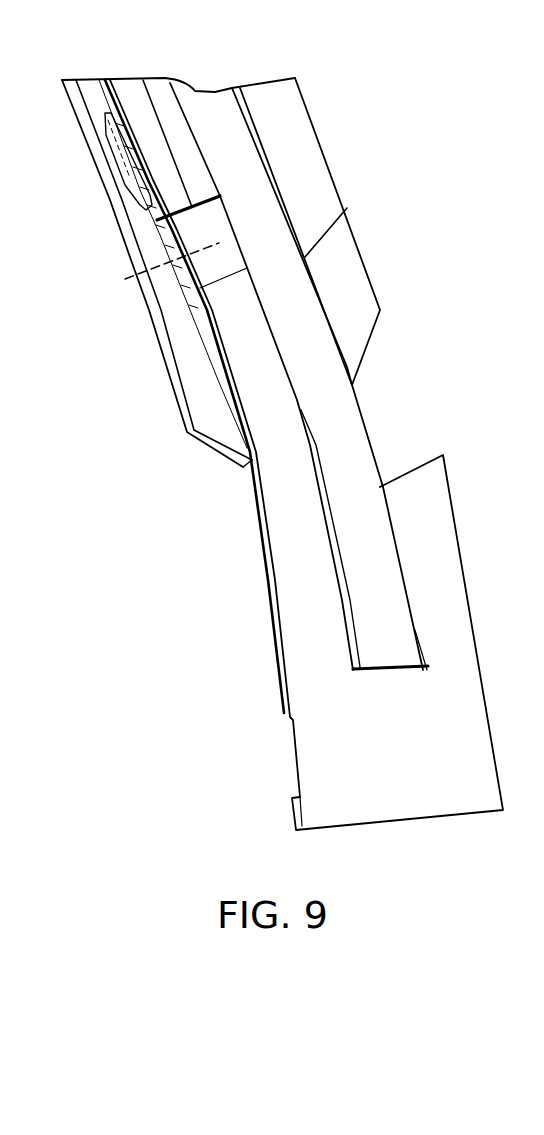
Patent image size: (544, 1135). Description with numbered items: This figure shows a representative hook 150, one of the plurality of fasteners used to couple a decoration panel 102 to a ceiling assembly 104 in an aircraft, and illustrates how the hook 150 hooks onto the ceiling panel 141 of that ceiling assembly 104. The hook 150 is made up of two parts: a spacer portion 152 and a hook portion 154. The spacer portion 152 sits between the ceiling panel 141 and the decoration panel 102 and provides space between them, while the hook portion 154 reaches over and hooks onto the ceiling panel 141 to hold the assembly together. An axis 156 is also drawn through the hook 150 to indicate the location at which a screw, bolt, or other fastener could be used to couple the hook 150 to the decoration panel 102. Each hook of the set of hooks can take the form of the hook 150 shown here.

The hook 150 is at (250, 655).
The decoration panel 102 is at (198, 365).
The axis 156 is at (128, 262).
The spacer portion 152 is at (272, 412).
The ceiling panel 141 is at (347, 432).
The ceiling assembly 104 is at (352, 287).
The hook portion 154 is at (317, 750).